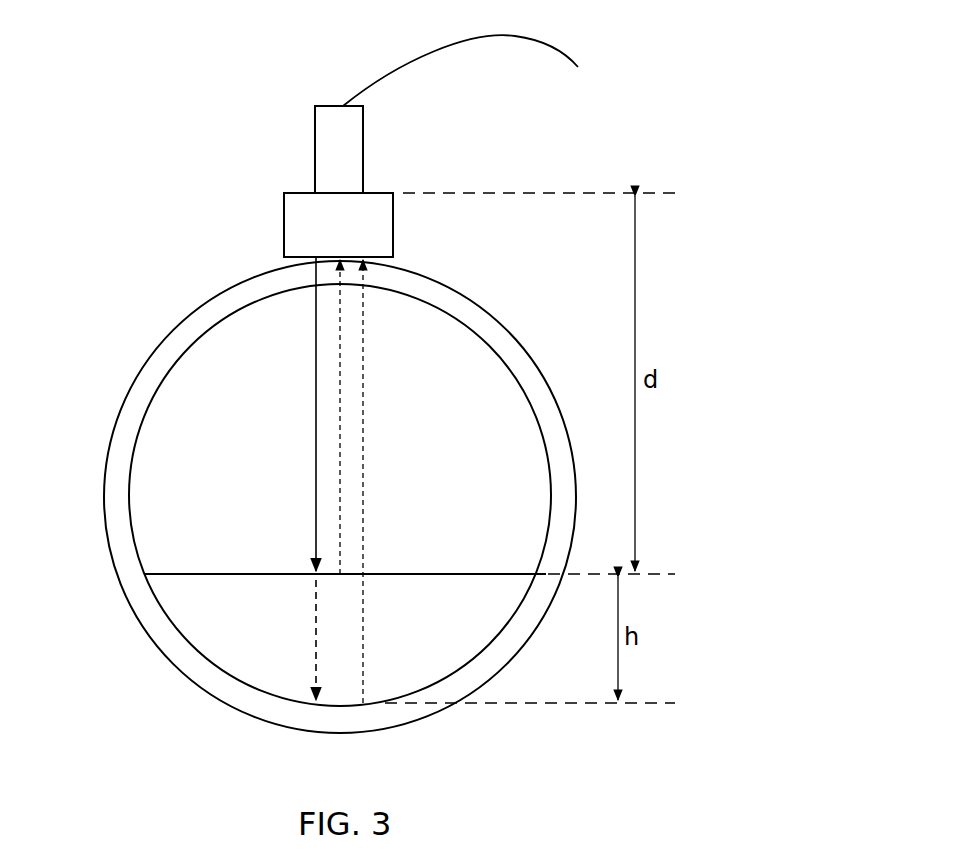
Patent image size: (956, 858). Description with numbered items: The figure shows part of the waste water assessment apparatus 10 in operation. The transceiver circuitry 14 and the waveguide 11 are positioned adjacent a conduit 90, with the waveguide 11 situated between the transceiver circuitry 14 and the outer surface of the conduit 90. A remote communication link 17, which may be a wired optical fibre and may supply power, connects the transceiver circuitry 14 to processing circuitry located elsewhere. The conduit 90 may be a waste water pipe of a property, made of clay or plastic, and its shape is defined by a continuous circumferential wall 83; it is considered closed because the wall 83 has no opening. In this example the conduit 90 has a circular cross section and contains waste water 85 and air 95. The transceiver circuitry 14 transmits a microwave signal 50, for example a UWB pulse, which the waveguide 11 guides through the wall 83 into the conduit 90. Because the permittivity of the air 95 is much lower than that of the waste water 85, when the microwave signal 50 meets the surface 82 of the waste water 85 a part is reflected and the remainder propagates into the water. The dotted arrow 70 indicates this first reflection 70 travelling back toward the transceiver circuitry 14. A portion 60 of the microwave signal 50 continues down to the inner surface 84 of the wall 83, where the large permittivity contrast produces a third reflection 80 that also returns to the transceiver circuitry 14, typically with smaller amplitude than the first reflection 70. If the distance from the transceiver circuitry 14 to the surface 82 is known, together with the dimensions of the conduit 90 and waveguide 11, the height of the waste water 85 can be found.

The waste water assessment apparatus 10 is at (244, 75).
The waveguide 11 is at (300, 236).
The transceiver circuitry 14 is at (338, 150).
The remote communication link 17 is at (450, 48).
The microwave signal 50 is at (316, 450).
The portion of the microwave signal 60 is at (316, 618).
The first reflection 70 is at (340, 401).
The third reflection 80 is at (366, 475).
The surface of the waste water 82 is at (440, 574).
The circumferential wall 83 is at (545, 397).
The inner surface of the wall 84 is at (378, 707).
The waste water 85 is at (210, 624).
The conduit 90 is at (125, 430).
The air 95 is at (230, 373).